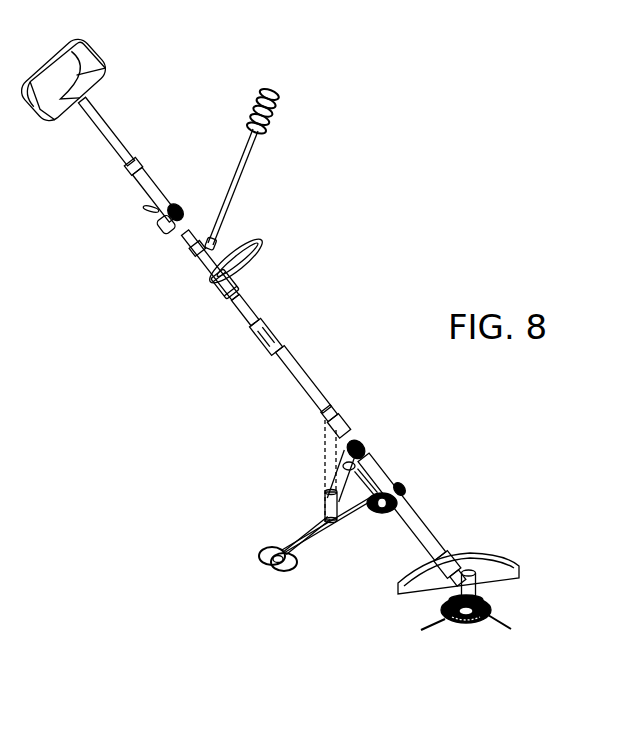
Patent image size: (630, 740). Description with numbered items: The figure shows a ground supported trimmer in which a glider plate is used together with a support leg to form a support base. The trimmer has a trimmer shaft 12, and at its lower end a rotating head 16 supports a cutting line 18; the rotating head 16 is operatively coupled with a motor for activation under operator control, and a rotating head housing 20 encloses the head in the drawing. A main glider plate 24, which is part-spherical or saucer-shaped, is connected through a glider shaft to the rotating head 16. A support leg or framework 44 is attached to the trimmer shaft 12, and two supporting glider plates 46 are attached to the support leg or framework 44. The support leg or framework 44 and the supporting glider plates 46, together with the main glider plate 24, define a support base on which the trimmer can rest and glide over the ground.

The trimmer shaft 12 is at (324, 397).
The rotating head 16 is at (415, 628).
The cutting line 18 is at (507, 583).
The trimmer head 20 is at (454, 628).
The glider plate 24 is at (470, 627).
The support leg or framework 44 is at (316, 458).
The supporting glider plates 46 is at (382, 513).